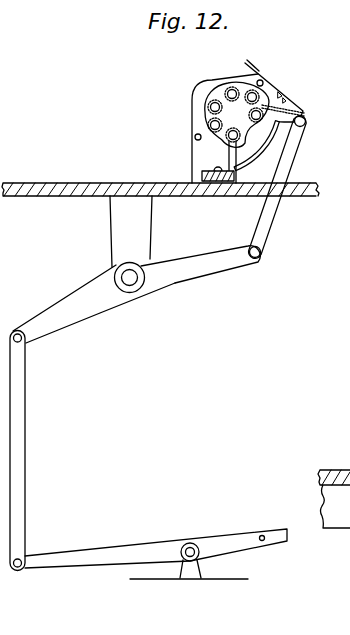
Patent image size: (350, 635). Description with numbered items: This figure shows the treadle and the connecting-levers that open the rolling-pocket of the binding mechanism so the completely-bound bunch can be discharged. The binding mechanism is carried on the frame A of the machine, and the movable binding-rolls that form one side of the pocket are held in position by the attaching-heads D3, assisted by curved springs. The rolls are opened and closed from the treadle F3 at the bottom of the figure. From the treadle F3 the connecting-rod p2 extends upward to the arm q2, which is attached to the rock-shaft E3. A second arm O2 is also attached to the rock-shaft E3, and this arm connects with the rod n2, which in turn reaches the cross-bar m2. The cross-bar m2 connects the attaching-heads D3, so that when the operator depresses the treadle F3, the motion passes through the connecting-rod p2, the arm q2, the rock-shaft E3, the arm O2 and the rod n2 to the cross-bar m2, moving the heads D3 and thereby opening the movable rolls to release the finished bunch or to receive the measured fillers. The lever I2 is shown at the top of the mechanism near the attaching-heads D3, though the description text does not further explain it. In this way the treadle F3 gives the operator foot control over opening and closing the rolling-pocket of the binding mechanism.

The frame A is at (60, 183).
The lever handle I2 is at (251, 69).
The attaching-head D3 is at (281, 95).
The cross-bar m2 is at (306, 123).
The rod n2 is at (274, 218).
The arm O2 is at (200, 264).
The arm q2 is at (94, 304).
The rock-shaft E3 is at (129, 273).
The connecting-rod p2 is at (18, 422).
The treadle F3 is at (128, 548).